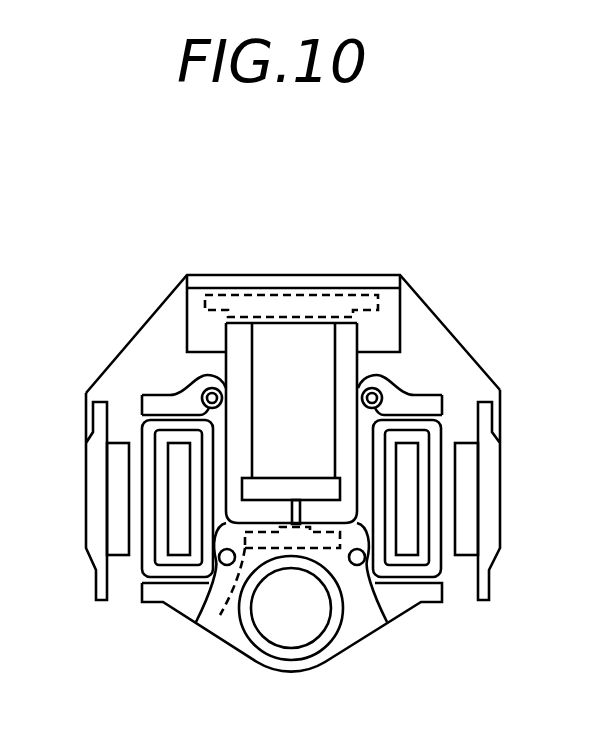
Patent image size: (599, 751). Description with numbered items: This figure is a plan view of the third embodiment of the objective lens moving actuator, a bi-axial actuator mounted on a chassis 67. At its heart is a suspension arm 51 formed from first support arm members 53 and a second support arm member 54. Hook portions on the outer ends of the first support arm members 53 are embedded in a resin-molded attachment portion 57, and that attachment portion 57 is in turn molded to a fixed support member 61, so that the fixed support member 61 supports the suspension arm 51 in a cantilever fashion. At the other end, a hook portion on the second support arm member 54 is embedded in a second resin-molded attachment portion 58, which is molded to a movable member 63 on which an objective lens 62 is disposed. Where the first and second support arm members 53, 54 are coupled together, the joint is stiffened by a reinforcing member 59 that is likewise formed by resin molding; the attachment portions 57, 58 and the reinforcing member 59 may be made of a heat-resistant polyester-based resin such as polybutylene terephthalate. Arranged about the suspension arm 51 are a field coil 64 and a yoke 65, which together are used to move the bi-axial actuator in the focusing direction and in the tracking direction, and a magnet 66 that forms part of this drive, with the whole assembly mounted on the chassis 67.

The suspension arm 51 is at (341, 361).
The first support arm member 53 is at (270, 367).
The second support arm member 54 is at (228, 566).
The attachment portion 57 is at (315, 315).
The attachment portion 58 is at (218, 636).
The reinforcing member 59 is at (327, 490).
The fixed support member 61 is at (198, 302).
The objective lens 62 is at (305, 622).
The movable member 63 is at (378, 610).
The field coil 64 is at (148, 456).
The yoke 65 is at (178, 494).
The magnet 66 is at (111, 542).
The chassis 67 is at (440, 357).